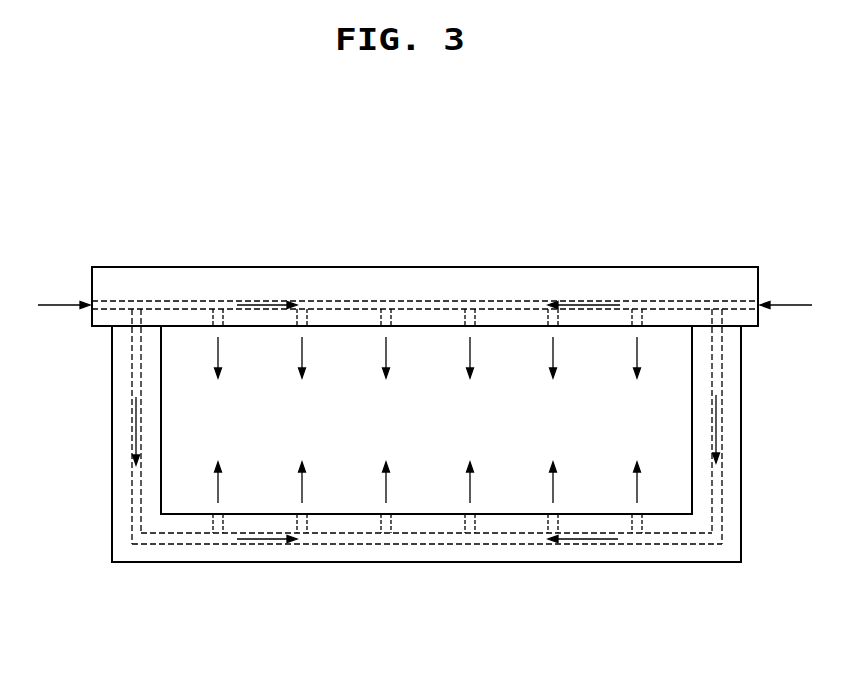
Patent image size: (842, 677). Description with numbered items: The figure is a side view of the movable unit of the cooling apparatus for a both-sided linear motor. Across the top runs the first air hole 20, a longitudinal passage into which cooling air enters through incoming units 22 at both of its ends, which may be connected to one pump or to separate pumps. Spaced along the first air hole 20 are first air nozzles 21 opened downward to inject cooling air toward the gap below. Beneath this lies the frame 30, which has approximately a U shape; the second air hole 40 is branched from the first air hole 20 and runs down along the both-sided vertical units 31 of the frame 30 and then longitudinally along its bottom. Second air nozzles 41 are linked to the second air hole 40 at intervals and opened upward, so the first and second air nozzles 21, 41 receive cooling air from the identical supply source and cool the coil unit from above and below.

The first air hole 20 is at (507, 303).
The first air nozzle 21 is at (386, 318).
The incoming unit 22 is at (115, 305).
The frame 30 is at (580, 552).
The vertical unit 31 is at (120, 411).
The second air hole 40 is at (500, 540).
The second air nozzle 41 is at (216, 522).